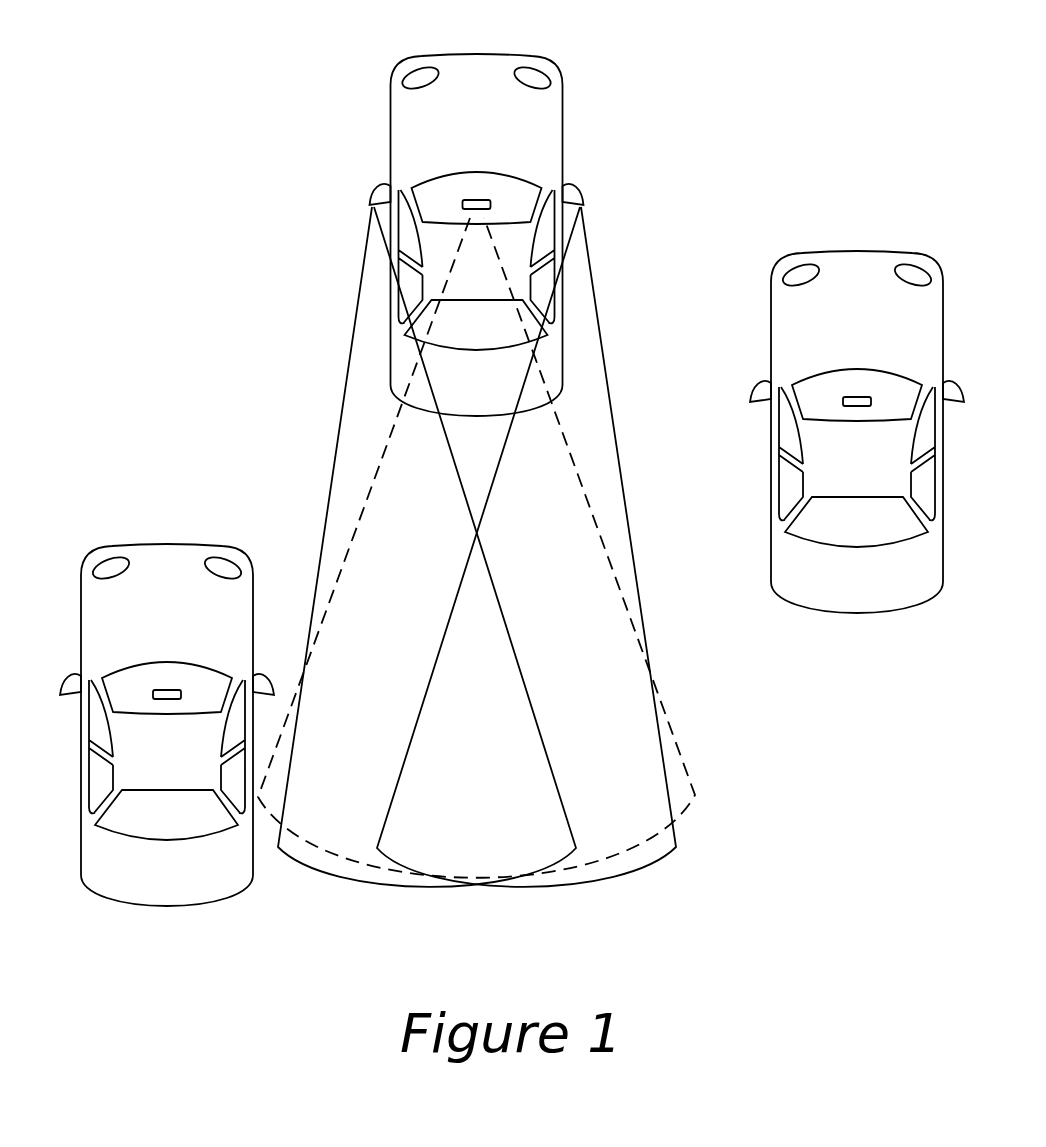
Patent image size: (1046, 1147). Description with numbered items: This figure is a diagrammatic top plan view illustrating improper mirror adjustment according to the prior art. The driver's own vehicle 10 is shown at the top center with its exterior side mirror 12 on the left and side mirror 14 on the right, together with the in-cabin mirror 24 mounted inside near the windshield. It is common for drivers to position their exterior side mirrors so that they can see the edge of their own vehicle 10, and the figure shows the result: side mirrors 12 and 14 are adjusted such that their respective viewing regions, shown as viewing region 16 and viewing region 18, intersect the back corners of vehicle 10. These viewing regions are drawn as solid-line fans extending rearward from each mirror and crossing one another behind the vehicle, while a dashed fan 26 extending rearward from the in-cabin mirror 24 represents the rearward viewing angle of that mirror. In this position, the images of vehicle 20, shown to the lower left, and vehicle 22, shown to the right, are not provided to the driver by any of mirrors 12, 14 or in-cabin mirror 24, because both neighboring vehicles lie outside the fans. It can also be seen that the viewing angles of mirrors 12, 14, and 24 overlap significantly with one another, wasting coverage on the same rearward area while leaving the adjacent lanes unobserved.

The vehicle 10 is at (457, 118).
The side mirror 12 is at (374, 194).
The side mirror 14 is at (582, 193).
The viewing region 16 is at (366, 313).
The viewing region 18 is at (585, 316).
The vehicle 20 is at (147, 608).
The vehicle 22 is at (837, 315).
The in-cabin mirror 24 is at (478, 200).
The rearview camera field of view 26 is at (577, 525).